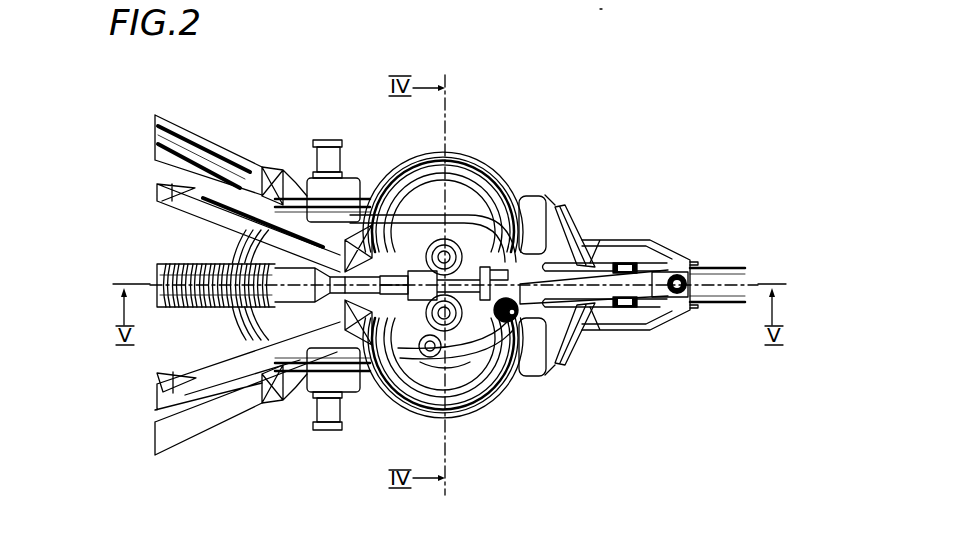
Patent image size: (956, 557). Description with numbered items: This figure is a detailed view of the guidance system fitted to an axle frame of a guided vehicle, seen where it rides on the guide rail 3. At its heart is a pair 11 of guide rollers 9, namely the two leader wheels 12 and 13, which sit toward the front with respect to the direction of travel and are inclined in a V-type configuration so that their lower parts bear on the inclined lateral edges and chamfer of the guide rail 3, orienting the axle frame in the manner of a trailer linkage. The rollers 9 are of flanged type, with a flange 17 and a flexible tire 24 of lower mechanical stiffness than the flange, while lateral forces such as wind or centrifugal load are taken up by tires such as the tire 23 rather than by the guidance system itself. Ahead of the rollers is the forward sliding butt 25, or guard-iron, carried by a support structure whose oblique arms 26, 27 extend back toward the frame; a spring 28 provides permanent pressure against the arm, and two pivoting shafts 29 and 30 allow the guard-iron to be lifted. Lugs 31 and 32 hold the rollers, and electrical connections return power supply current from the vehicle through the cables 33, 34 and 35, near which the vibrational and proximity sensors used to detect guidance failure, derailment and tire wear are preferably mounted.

The guide rail 3 is at (727, 278).
The guide roller 9 is at (466, 277).
The pair of leader wheels 11 is at (586, 97).
The leader wheel 12 is at (475, 141).
The leader wheel 13 is at (502, 423).
The flange 17 is at (381, 173).
The tire 23 is at (608, 6).
The flexible tire 24 is at (508, 178).
The forward sliding butt 25 is at (621, 228).
The oblique arm 26 is at (192, 108).
The oblique arm 27 is at (196, 463).
The spring 28 is at (177, 256).
The pivoting shaft 29 is at (328, 139).
The pivoting shaft 30 is at (324, 431).
The lug 31 is at (543, 180).
The lug 32 is at (549, 380).
The cable 33 is at (307, 197).
The cable 34 is at (234, 382).
The cable 35 is at (602, 300).